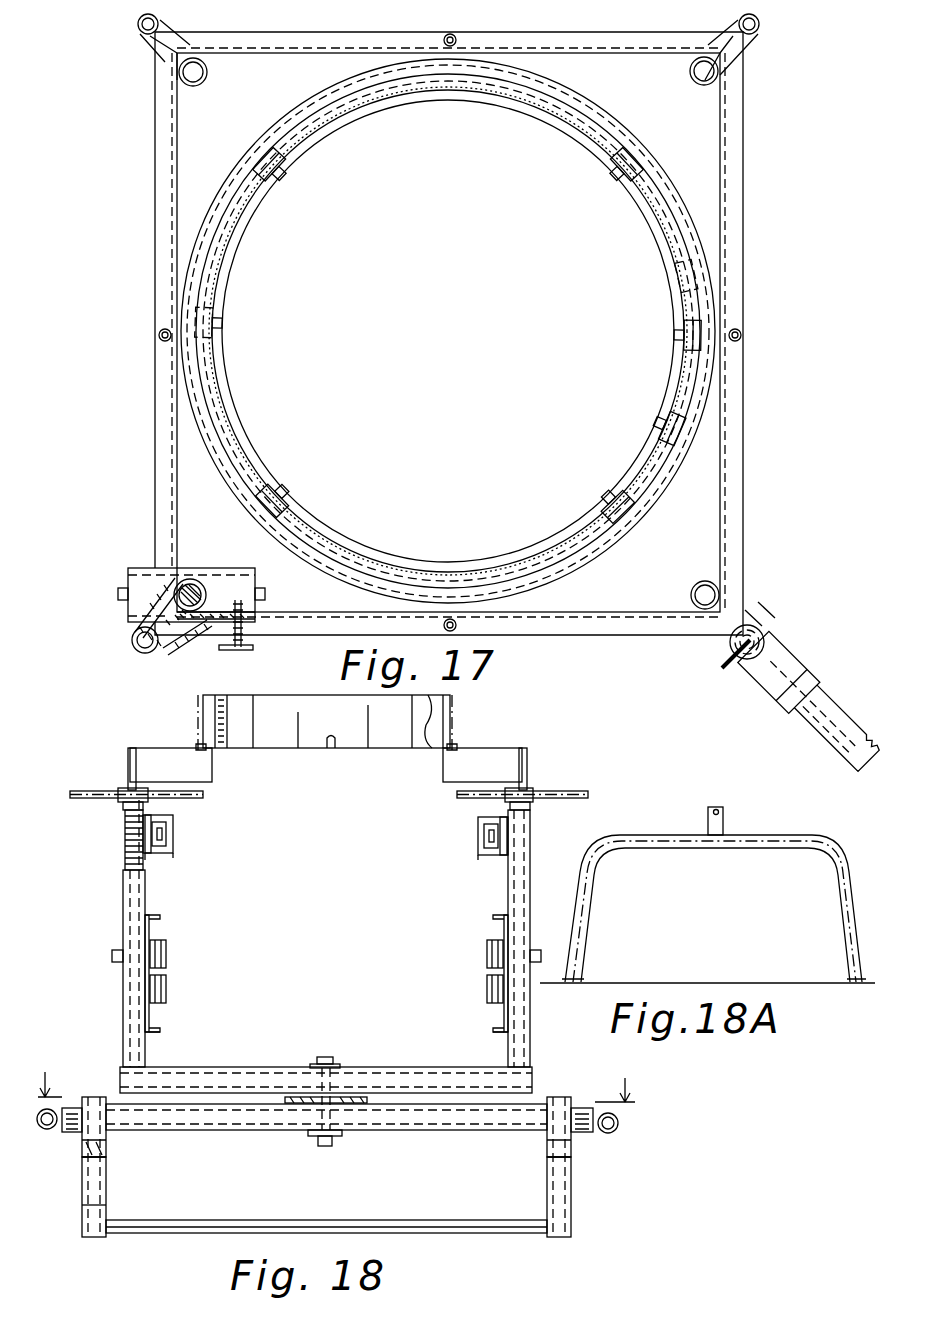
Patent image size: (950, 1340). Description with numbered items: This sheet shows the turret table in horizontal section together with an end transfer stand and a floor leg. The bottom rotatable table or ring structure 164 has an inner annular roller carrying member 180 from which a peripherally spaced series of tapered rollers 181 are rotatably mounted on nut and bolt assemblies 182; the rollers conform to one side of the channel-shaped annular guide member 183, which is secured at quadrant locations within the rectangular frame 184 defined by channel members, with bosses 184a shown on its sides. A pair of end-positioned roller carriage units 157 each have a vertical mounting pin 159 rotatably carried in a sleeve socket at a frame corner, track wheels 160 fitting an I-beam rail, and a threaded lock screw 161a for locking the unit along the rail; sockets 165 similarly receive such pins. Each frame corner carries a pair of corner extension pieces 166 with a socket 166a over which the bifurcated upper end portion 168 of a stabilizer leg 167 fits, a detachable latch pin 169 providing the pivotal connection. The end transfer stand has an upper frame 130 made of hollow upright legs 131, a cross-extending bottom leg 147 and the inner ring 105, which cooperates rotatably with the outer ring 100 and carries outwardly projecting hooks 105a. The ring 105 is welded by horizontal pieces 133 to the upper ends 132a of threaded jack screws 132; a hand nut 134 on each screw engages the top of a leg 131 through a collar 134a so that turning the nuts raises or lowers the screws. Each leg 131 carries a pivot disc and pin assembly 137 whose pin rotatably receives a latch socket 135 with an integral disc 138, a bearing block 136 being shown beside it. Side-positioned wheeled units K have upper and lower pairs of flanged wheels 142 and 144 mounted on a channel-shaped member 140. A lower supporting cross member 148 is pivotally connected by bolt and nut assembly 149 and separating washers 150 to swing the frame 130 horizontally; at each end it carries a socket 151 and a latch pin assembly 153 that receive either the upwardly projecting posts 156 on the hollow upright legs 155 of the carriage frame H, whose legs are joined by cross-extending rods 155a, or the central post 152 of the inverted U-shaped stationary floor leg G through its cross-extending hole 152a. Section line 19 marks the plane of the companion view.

In FIG. 17, the bottom rotatable table 164 is at (466, 335).
In FIG. 17, the inner ring 180 is at (248, 228).
In FIG. 17, the tapered rollers 181 is at (650, 158).
In FIG. 17, the nut and bolt assemblies 182 is at (625, 165).
In FIG. 17, the channel-shaped outer guide member 183 is at (236, 472).
In FIG. 17, the rectangular frame 184 is at (155, 390).
In FIG. 17, the frame boss 184a is at (455, 32).
In FIG. 17, the sockets 165 is at (695, 85).
In FIG. 17, the corner extension pieces 166 is at (140, 50).
In FIG. 17, the socket 166a is at (140, 20).
In FIG. 17, the stabilizer leg 167 is at (815, 738).
In FIG. 17, the bifurcated upper end portion 168 is at (770, 640).
In FIG. 17, the latch pin 169 is at (720, 653).
In FIG. 17, the roller carriage unit 157 is at (255, 605).
In FIG. 17, the vertical mounting pin 159 is at (198, 580).
In FIG. 17, the track wheels 160 is at (122, 588).
In FIG. 17, the threaded lock screw 161a is at (236, 652).
In FIG. 18, the inner ring 105 is at (350, 698).
In FIG. 18, the outwardly-projecting hooks 105a is at (338, 745).
In FIG. 18, the outer ring 100 is at (452, 722).
In FIG. 18, the horizontal pieces 133 is at (178, 748).
In FIG. 18, the upper ends of jack screws 132a is at (128, 765).
In FIG. 18, the hand nut 134 is at (100, 805).
In FIG. 18, the collar 134a is at (148, 806).
In FIG. 18, the threaded jack screws 132 is at (125, 855).
In FIG. 18, the upright legs 131 is at (123, 896).
In FIG. 18, the bearing block 136 is at (175, 826).
In FIG. 18, the latch socket 135 is at (176, 845).
In FIG. 18, the disc or washer 138 is at (150, 853).
In FIG. 18, the pivot disc and pin assembly 137 is at (150, 855).
In FIG. 18, the wheeled units K is at (152, 918).
In FIG. 18, the upper flanged wheels 142 is at (168, 944).
In FIG. 18, the lower flanged wheels 144 is at (168, 990).
In FIG. 18, the channel-shaped member 140 is at (155, 1020).
In FIG. 18, the upper frame 130 is at (280, 1067).
In FIG. 18, the bolt and nut assembly 149 is at (332, 1057).
In FIG. 18, the bottom leg 147 is at (430, 1067).
In FIG. 18, the lower supporting cross member 148 is at (425, 1130).
In FIG. 18, the separating washers 150 is at (285, 1105).
In FIG. 18, the socket 151 is at (104, 1078).
In FIG. 18, the latch pin assembly 153 is at (70, 1135).
In FIG. 18, the hollow upright legs 155 is at (106, 1210).
In FIG. 18, the cross-extending rods 155a is at (180, 1220).
In FIG. 18, the upwardly-projecting post 156 is at (88, 1228).
In FIG. 18, the carriage frame H is at (82, 1192).
In FIG. 18, the section line 19 is at (338, 1073).
In FIG. 18A, the stationary floor leg G is at (675, 850).
In FIG. 18A, the central pin or post 152 is at (725, 822).
In FIG. 18A, the cross-extending hole 152a is at (712, 812).